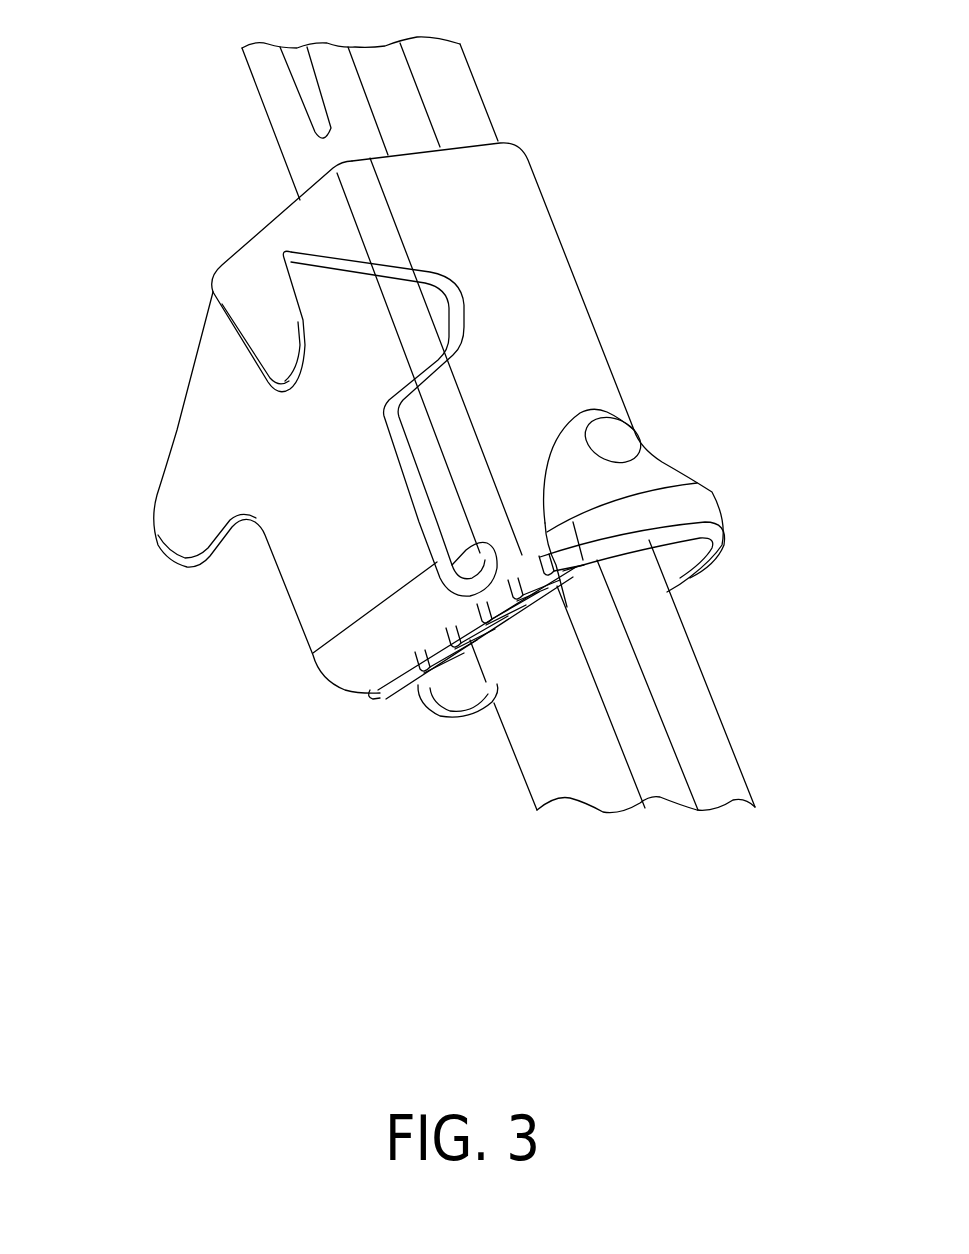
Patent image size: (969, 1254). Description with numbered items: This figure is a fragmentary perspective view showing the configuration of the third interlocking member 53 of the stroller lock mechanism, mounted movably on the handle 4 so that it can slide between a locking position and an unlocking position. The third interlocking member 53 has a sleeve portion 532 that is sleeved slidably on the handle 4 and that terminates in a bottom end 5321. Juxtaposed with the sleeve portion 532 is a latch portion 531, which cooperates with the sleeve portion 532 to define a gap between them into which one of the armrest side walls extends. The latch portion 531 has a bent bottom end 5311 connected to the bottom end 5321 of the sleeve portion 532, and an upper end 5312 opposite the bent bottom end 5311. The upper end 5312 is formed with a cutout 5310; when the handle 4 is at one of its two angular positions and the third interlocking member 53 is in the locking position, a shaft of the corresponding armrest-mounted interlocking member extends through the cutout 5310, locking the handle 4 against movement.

The handle 4 is at (248, 103).
The third interlocking member 53 is at (435, 455).
The latch portion 531 is at (311, 490).
The cutout 5310 is at (255, 328).
The bent bottom end 5311 is at (362, 657).
The upper end 5312 is at (213, 355).
The sleeve portion 532 is at (684, 471).
The bottom end 5321 is at (537, 557).